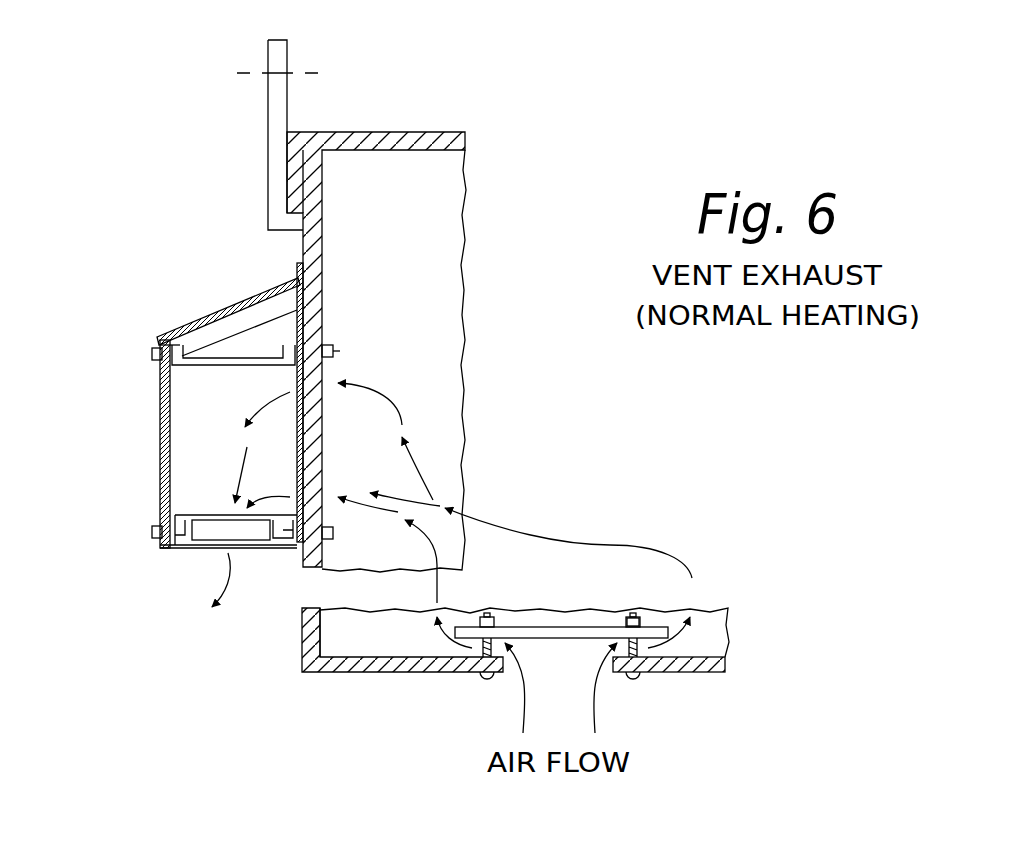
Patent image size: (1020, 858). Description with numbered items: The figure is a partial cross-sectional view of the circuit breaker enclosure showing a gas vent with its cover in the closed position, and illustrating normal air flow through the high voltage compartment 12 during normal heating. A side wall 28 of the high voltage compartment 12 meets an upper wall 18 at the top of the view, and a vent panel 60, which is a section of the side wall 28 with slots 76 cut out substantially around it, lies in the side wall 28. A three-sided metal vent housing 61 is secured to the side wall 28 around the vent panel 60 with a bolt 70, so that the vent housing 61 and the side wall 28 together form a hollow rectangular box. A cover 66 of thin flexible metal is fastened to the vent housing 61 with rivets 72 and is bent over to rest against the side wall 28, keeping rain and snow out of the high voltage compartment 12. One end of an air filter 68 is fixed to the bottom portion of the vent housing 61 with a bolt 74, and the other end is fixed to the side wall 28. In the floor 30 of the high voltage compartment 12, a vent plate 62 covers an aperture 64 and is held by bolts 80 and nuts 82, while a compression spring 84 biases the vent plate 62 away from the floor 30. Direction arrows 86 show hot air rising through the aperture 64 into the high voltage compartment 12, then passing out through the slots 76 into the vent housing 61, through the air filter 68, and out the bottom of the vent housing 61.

The high voltage compartment 12 is at (544, 214).
The top wall panel 18 is at (382, 133).
The side wall 28 is at (302, 248).
The floor 30 is at (707, 675).
The vent panel 60 is at (322, 442).
The vent housing 61 is at (160, 440).
The vent plate 62 is at (553, 627).
The aperture 64 is at (548, 688).
The cover 66 is at (203, 322).
The air filter 68 is at (245, 532).
The bolt 70 is at (333, 351).
The rivet 72 is at (155, 355).
The bolt 74 is at (155, 530).
The slot 76 is at (300, 385).
The bolt 80 is at (630, 620).
The nut 82 is at (640, 624).
The compression spring 84 is at (472, 647).
The direction arrows 86 is at (510, 530).